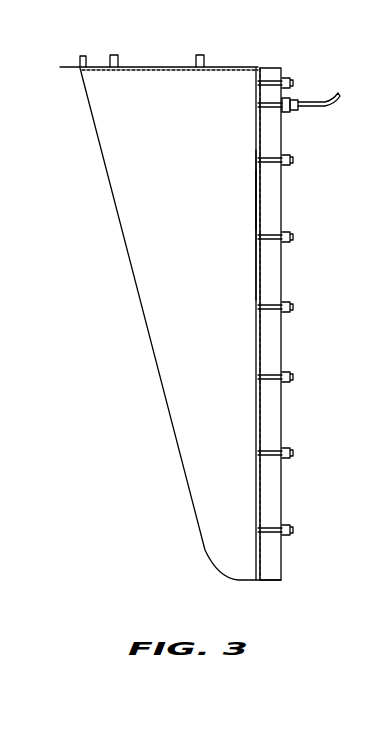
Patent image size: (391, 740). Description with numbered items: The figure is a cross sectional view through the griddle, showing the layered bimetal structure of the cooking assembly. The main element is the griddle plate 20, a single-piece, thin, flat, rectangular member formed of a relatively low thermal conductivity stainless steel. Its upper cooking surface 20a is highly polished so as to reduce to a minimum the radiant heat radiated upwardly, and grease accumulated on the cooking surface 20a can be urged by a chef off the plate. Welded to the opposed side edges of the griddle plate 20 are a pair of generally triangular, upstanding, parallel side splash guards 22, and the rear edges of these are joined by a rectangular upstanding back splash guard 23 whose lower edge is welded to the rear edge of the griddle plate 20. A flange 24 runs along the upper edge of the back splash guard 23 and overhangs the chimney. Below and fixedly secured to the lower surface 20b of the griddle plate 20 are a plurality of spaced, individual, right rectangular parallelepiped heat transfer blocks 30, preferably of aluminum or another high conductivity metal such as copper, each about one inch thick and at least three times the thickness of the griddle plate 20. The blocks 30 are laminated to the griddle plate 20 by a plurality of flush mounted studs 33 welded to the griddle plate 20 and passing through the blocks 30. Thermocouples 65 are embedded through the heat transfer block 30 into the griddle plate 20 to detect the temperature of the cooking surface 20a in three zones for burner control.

The griddle plate 20 is at (257, 292).
The upper cooking surface 20a is at (258, 246).
The lower surface 20b is at (263, 198).
The side splash guards 22 is at (171, 370).
The back splash guard 23 is at (146, 71).
The flange 24 is at (80, 67).
The heat transfer blocks 30 is at (281, 416).
The flush mounted studs 33 is at (273, 238).
The thermocouples 65 is at (323, 108).